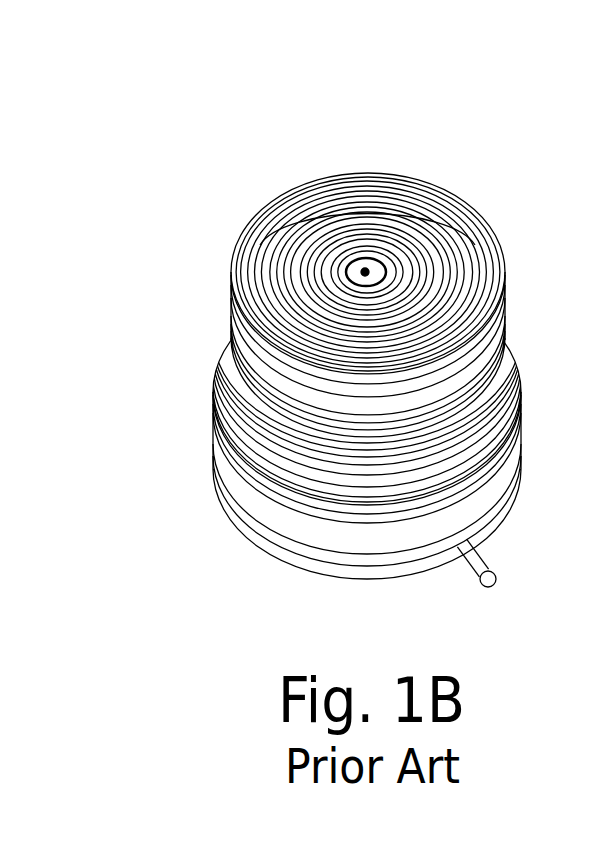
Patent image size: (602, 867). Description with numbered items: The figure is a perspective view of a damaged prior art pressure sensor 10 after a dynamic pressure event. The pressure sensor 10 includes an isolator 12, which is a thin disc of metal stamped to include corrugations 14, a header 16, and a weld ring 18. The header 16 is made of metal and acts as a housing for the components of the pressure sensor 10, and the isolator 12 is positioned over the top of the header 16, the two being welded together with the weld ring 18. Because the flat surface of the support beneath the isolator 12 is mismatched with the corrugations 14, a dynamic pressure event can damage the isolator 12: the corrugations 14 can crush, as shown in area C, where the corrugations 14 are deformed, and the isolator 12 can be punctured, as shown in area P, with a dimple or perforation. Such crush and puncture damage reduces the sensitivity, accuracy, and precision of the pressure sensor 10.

The pressure sensor 10 is at (340, 305).
The isolator 12 is at (333, 205).
The corrugations 14 is at (310, 330).
The header 16 is at (292, 398).
The weld ring 18 is at (240, 288).
The area C is at (432, 207).
The area P is at (372, 272).